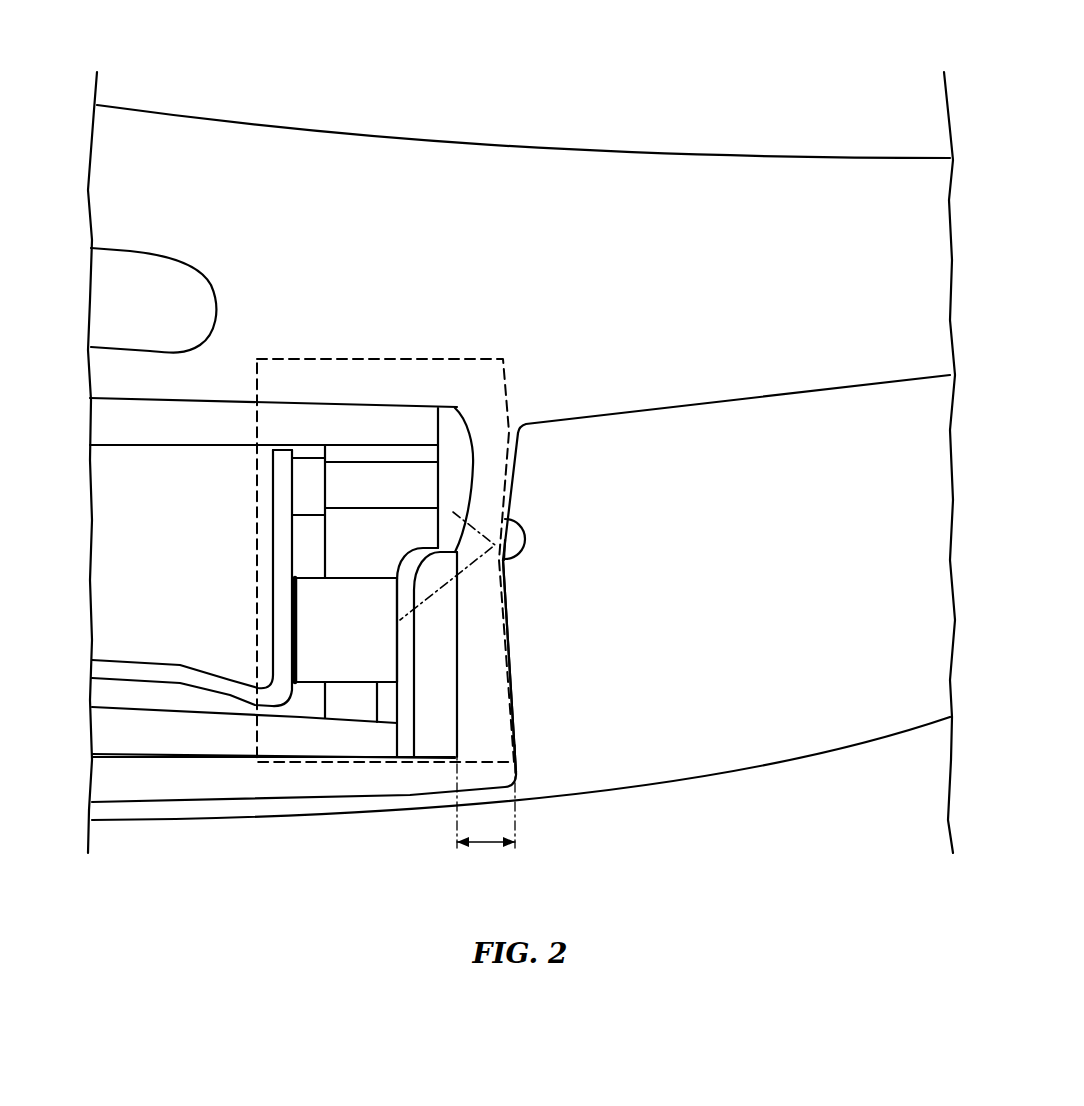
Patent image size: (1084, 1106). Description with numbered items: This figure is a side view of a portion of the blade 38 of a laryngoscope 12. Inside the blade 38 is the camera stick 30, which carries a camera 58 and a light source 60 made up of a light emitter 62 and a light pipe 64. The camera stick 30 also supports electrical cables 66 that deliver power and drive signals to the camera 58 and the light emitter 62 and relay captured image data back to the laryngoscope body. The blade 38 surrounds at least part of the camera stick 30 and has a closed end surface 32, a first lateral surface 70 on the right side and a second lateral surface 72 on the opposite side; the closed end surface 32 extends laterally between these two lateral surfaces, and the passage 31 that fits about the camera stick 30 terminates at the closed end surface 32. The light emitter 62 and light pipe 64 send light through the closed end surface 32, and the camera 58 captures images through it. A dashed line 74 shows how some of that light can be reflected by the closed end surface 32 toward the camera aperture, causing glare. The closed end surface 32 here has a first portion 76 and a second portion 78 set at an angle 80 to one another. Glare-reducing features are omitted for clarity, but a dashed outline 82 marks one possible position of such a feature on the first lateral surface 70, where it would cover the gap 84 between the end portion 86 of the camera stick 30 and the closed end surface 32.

The laryngoscope 12 is at (876, 44).
The camera stick 30 is at (97, 420).
The passage 31 is at (243, 760).
The closed end surface 32 is at (513, 622).
The blade 38 is at (555, 162).
The camera 58 is at (377, 683).
The light source 60 is at (343, 605).
The light emitter 62 is at (345, 487).
The light pipe 64 is at (413, 462).
The electrical cables 66 is at (198, 672).
The first lateral surface 70 is at (448, 769).
The second lateral surface 72 is at (521, 807).
The dashed line 74 is at (468, 562).
The first portion 76 is at (513, 673).
The second portion 78 is at (508, 503).
The angle 80 is at (526, 538).
The outline 82 is at (297, 763).
The gap 84 is at (487, 847).
The end portion 86 is at (458, 735).